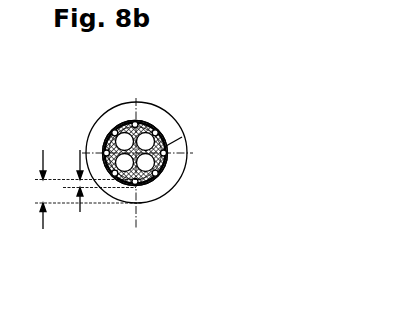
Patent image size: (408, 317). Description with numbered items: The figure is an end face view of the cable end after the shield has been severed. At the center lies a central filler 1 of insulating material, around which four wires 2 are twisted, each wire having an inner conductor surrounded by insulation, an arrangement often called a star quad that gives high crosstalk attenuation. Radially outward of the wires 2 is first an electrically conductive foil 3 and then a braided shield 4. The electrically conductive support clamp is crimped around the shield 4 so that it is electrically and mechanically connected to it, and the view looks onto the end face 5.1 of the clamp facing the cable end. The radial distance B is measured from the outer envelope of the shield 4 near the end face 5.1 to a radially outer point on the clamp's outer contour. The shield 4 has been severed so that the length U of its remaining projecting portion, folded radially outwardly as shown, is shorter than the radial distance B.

The central filler 1 is at (165, 170).
The wires 2 is at (146, 183).
The electrically conductive foil 3 is at (145, 185).
The shield 4 is at (182, 137).
The end face 5.1 is at (150, 124).
The radial distance B is at (88, 189).
The length U is at (99, 181).